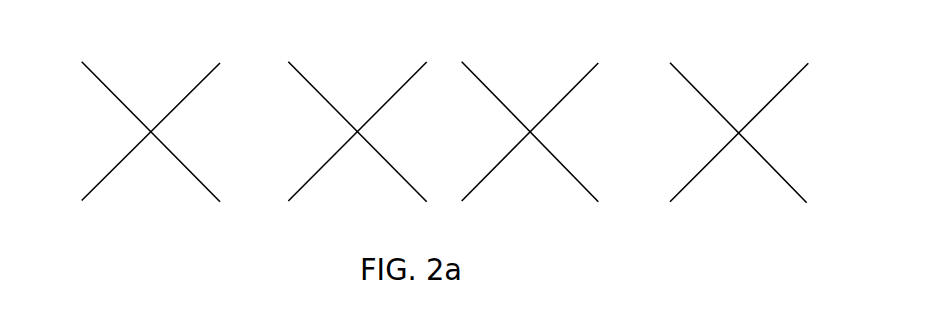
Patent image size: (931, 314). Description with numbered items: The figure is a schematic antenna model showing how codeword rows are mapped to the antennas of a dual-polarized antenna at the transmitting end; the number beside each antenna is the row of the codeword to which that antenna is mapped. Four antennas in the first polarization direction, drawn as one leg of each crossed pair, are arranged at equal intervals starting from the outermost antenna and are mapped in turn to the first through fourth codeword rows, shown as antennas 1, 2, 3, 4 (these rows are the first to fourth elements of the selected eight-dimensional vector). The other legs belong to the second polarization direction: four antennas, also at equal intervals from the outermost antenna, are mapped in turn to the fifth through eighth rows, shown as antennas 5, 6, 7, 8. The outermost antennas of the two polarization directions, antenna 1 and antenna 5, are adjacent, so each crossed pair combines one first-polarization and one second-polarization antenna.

The first polarization direction antenna 1 is at (140, 118).
The first polarization direction antenna 2 is at (355, 118).
The first polarization direction antenna 3 is at (528, 119).
The first polarization direction antenna 4 is at (733, 119).
The second polarization direction antenna 5 is at (154, 118).
The second polarization direction antenna 6 is at (357, 118).
The second polarization direction antenna 7 is at (532, 118).
The second polarization direction antenna 8 is at (740, 119).